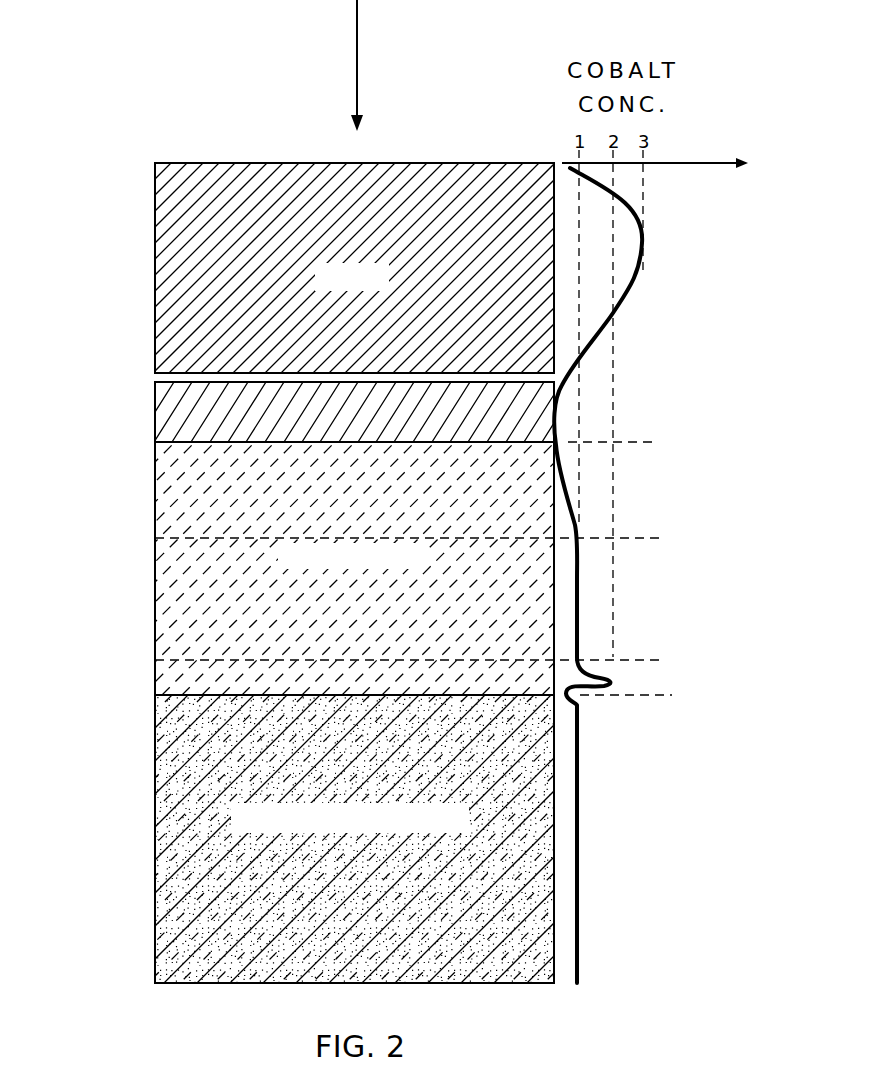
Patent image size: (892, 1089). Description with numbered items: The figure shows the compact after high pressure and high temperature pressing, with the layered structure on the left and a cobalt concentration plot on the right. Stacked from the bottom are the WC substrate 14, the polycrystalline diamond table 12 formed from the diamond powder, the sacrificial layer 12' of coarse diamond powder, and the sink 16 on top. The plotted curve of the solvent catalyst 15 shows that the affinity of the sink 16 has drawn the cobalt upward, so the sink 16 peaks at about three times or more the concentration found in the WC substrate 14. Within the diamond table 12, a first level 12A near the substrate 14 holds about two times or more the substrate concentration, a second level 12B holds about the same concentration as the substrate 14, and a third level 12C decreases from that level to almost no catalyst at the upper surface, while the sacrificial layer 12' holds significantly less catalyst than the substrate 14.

The sink 16 is at (192, 248).
The sacrificial layer of diamond powder 12' is at (321, 412).
The polycrystalline diamond table 12 is at (397, 568).
The first level of concentration of catalyst 12A is at (647, 679).
The second level of concentration of catalyst 12B is at (647, 603).
The third level of concentration of catalyst 12C is at (645, 492).
The WC substrate 14 is at (366, 865).
The solvent catalyst 15 is at (630, 293).